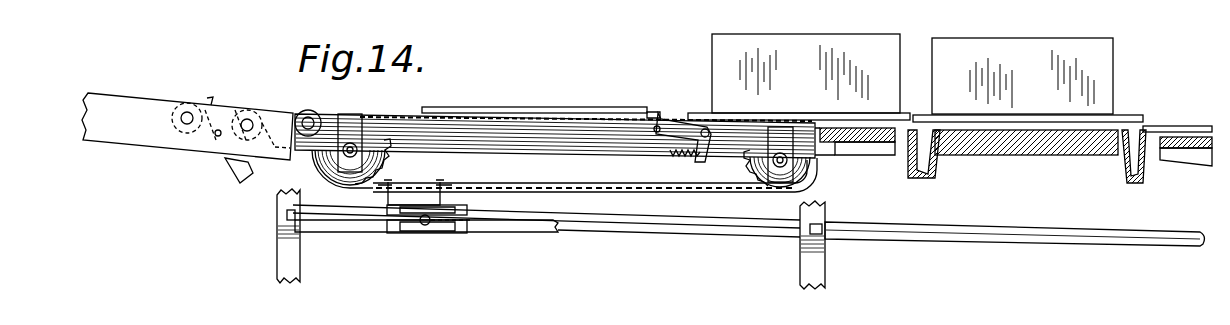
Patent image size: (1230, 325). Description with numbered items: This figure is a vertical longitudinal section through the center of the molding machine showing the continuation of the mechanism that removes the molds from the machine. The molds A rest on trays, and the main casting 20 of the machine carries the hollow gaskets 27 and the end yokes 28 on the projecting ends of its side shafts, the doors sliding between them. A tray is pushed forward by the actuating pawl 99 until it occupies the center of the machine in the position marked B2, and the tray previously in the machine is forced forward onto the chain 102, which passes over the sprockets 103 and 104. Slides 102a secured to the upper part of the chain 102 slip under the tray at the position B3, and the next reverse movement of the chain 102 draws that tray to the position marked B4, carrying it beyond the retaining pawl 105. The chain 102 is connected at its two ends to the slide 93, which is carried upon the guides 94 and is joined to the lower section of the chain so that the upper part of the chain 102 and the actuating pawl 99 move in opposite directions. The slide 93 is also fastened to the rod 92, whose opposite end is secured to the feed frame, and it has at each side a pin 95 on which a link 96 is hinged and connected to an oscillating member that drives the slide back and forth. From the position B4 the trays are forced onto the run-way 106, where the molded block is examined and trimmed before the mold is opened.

The run-way 106 is at (158, 108).
The chain 102 is at (555, 147).
The slide 102a is at (655, 112).
The sprocket 104 is at (387, 167).
The retaining pawl 105 is at (675, 118).
The sprocket 103 is at (747, 170).
The slide 93 is at (450, 205).
The guides 94 is at (625, 228).
The pin 95 is at (430, 225).
The link 96 is at (533, 230).
The rod 92 is at (1017, 242).
The actuating pawl 99 is at (1170, 130).
The main casting 20 is at (1005, 155).
The hollow gaskets 27 is at (932, 173).
The end yokes 28 is at (862, 148).
The molds A is at (912, 74).
The tray position B2 is at (1122, 127).
The tray position B3 is at (807, 113).
The tray position B4 is at (540, 110).